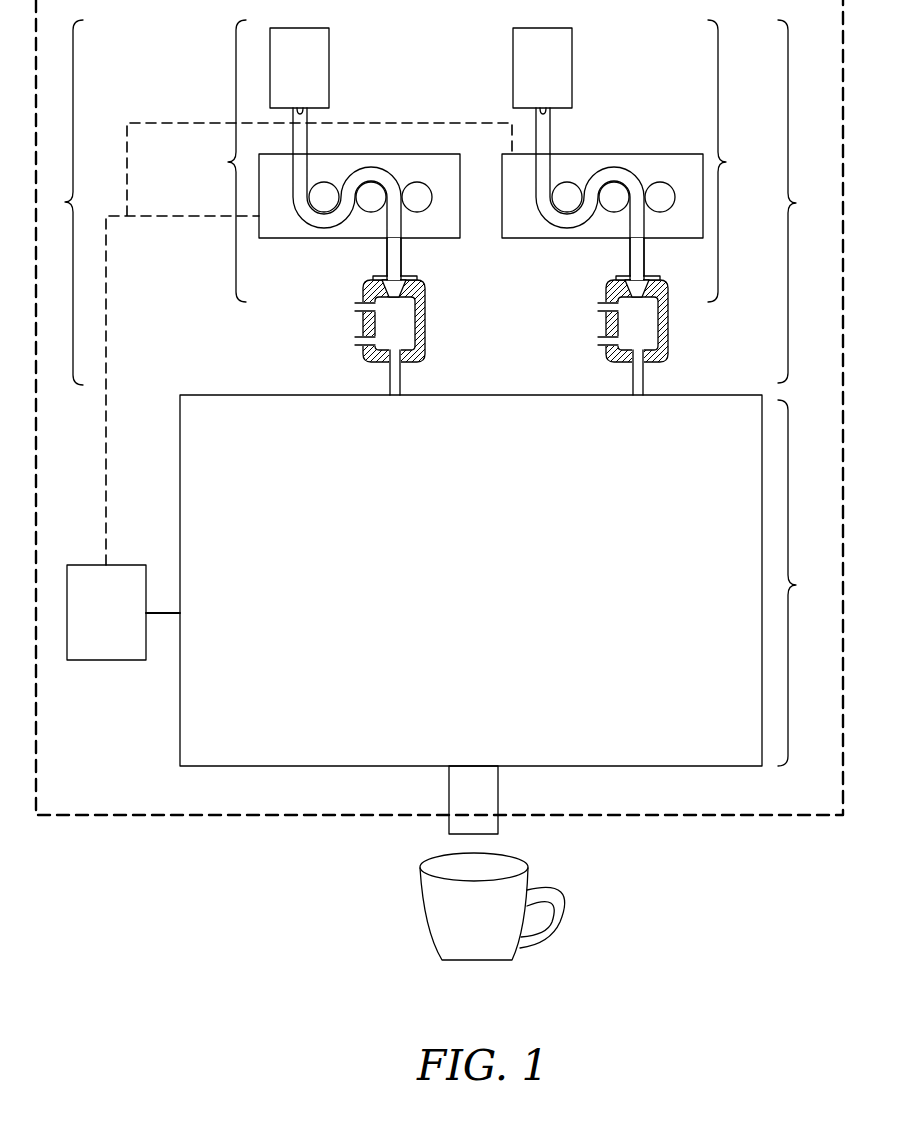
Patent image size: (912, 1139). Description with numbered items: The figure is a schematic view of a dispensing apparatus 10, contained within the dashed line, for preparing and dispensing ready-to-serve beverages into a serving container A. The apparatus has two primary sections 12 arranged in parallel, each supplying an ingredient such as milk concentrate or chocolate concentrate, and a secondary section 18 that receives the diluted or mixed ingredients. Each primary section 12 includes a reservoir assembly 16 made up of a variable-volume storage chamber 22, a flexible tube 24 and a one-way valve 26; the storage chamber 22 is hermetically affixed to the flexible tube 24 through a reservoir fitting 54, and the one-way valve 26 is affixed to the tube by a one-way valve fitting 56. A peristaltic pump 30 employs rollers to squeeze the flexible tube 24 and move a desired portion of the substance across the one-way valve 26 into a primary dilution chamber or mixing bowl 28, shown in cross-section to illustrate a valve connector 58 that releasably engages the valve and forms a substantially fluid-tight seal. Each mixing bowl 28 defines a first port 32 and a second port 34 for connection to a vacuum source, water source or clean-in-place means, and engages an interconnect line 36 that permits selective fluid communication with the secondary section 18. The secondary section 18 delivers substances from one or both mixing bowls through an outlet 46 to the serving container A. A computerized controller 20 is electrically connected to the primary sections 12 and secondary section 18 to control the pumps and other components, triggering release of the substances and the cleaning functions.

The dispensing apparatus 10 is at (268, 864).
The primary section 12 is at (435, 202).
The reservoir assembly 16 is at (480, 161).
The secondary section 18 is at (505, 580).
The computerized controller 20 is at (105, 660).
The variable-volume storage chamber 22 is at (318, 28).
The flexible tube 24 is at (303, 142).
The one-way valve 26 is at (404, 291).
The primary dilution chamber or mixing bowl 28 is at (425, 330).
The peristaltic pump 30 is at (437, 154).
The first port 32 is at (357, 307).
The second port 34 is at (357, 341).
The interconnect line 36 is at (402, 384).
The outlet 46 is at (477, 791).
The reservoir fitting 54 is at (304, 108).
The one-way valve fitting 56 is at (399, 276).
The valve connector 58 is at (418, 279).
The serving container A is at (437, 918).